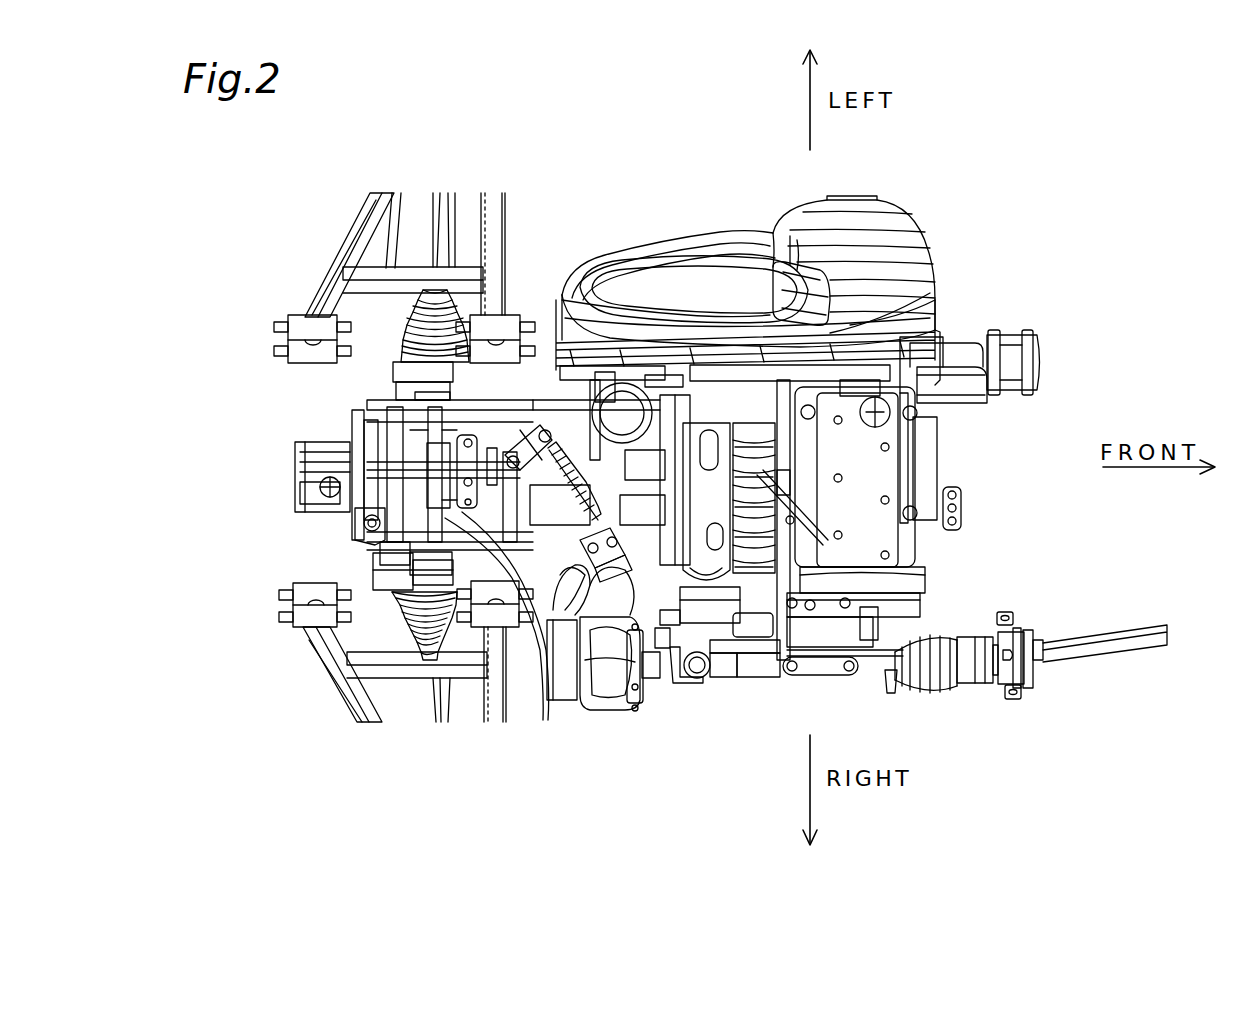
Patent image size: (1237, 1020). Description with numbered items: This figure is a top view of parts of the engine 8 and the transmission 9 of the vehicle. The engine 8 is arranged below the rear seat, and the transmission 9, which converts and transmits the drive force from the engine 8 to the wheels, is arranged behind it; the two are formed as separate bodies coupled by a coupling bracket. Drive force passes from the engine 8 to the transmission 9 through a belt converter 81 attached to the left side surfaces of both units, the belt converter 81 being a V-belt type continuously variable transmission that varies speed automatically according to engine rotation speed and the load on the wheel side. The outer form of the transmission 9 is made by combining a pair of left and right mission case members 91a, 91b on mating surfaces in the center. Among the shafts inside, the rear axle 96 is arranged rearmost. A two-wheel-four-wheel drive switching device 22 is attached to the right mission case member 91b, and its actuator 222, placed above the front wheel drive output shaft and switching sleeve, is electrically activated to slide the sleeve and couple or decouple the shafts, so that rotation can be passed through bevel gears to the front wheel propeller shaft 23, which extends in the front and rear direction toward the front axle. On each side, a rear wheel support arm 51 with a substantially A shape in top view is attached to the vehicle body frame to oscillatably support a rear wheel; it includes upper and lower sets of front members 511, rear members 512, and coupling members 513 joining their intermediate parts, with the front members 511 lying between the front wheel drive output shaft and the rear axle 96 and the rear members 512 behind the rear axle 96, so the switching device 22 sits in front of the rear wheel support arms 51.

The engine 8 is at (912, 370).
The belt converter 81 is at (713, 265).
The transmission 9 is at (519, 492).
The left mission case member 91a is at (416, 453).
The right mission case member 91b is at (355, 523).
The rear axle 96 is at (448, 205).
The two-wheel-four-wheel drive switching device 22 is at (575, 632).
The actuator 222 is at (636, 700).
The front wheel propeller shaft 23 is at (756, 662).
The rear wheel support arm 51 is at (280, 232).
The front member 511 is at (493, 205).
The rear member 512 is at (362, 232).
The coupling member 513 is at (393, 205).